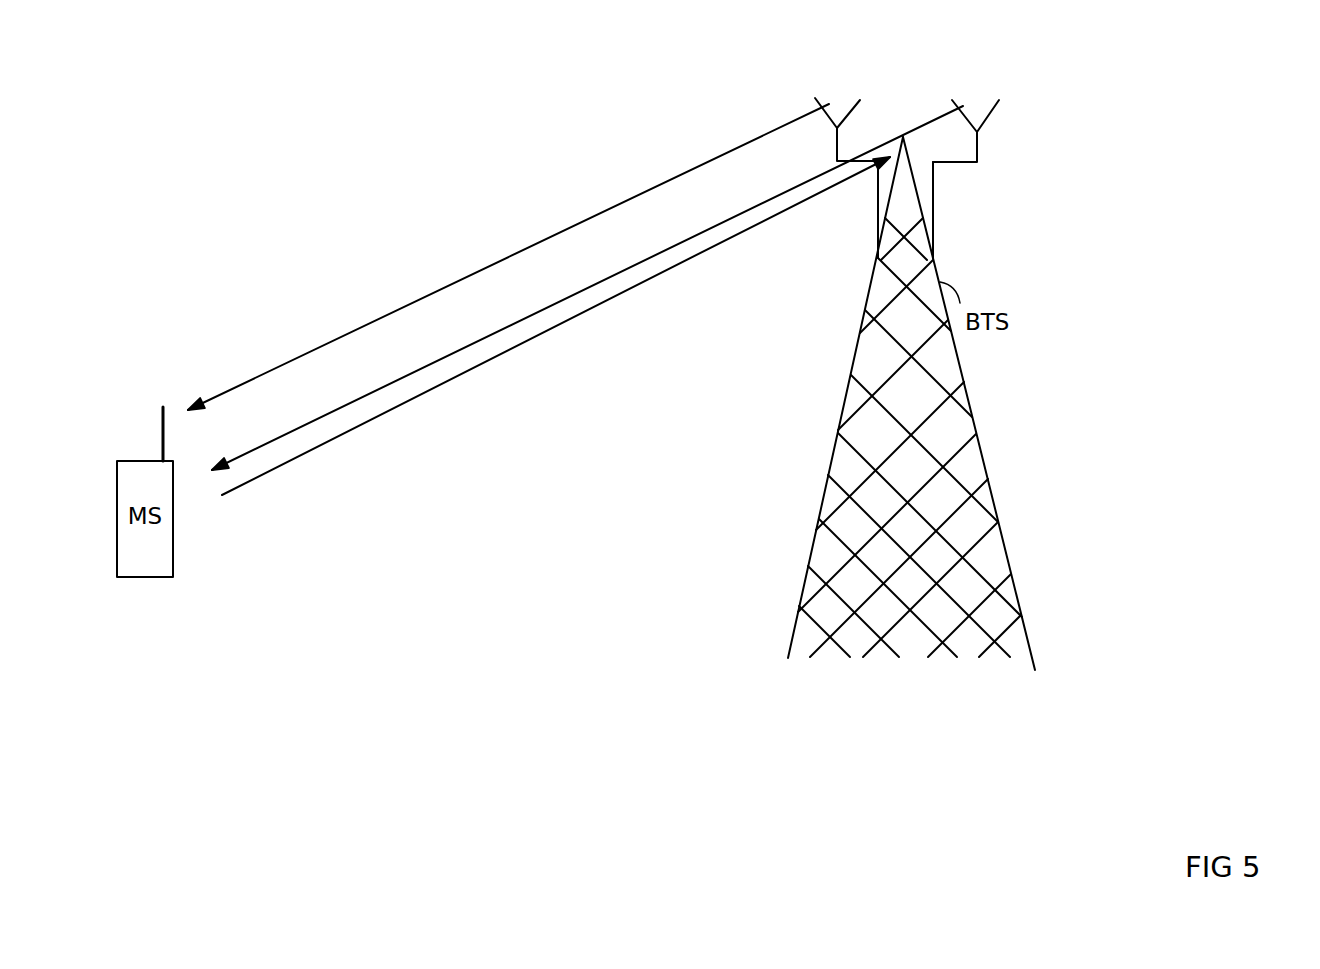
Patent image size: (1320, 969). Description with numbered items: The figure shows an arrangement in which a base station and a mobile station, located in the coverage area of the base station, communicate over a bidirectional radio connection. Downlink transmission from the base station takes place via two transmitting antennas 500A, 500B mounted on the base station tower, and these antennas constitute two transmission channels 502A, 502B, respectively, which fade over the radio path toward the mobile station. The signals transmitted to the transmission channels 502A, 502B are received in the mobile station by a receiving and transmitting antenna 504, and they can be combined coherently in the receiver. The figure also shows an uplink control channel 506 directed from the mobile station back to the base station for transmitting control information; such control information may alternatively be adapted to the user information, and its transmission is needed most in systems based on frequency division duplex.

The transmitting antenna 500A is at (857, 108).
The transmitting antenna 500B is at (978, 148).
The transmission channel 502A is at (573, 225).
The transmission channel 502B is at (525, 317).
The receiving and transmitting antenna 504 is at (162, 427).
The uplink control channel 506 is at (612, 298).